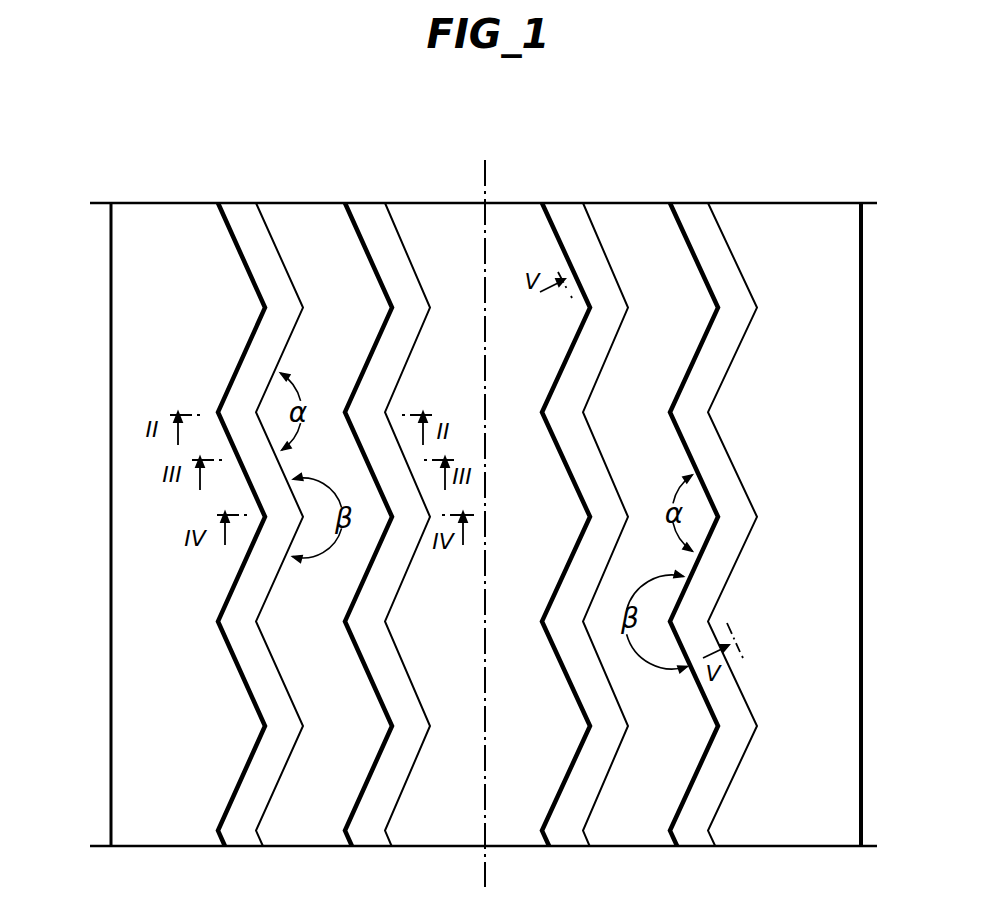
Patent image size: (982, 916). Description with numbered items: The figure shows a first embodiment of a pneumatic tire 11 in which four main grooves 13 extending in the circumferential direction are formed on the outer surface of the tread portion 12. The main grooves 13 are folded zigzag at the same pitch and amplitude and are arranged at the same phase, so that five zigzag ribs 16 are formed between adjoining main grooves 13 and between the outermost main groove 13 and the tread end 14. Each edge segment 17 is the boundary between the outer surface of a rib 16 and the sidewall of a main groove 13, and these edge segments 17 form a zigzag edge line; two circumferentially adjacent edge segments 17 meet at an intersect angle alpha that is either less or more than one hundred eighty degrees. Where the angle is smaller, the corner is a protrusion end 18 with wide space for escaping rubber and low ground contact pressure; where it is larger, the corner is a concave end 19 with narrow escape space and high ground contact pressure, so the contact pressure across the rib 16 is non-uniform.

The pneumatic tire 11 is at (771, 196).
The tread portion 12 is at (836, 216).
The main groove 13 is at (237, 218).
The tread end 14 is at (111, 292).
The rib 16 is at (157, 218).
The edge segment 17 is at (377, 337).
The intersect portion (protrusion end) 18 is at (256, 411).
The intersect portion (concave end) 19 is at (345, 412).